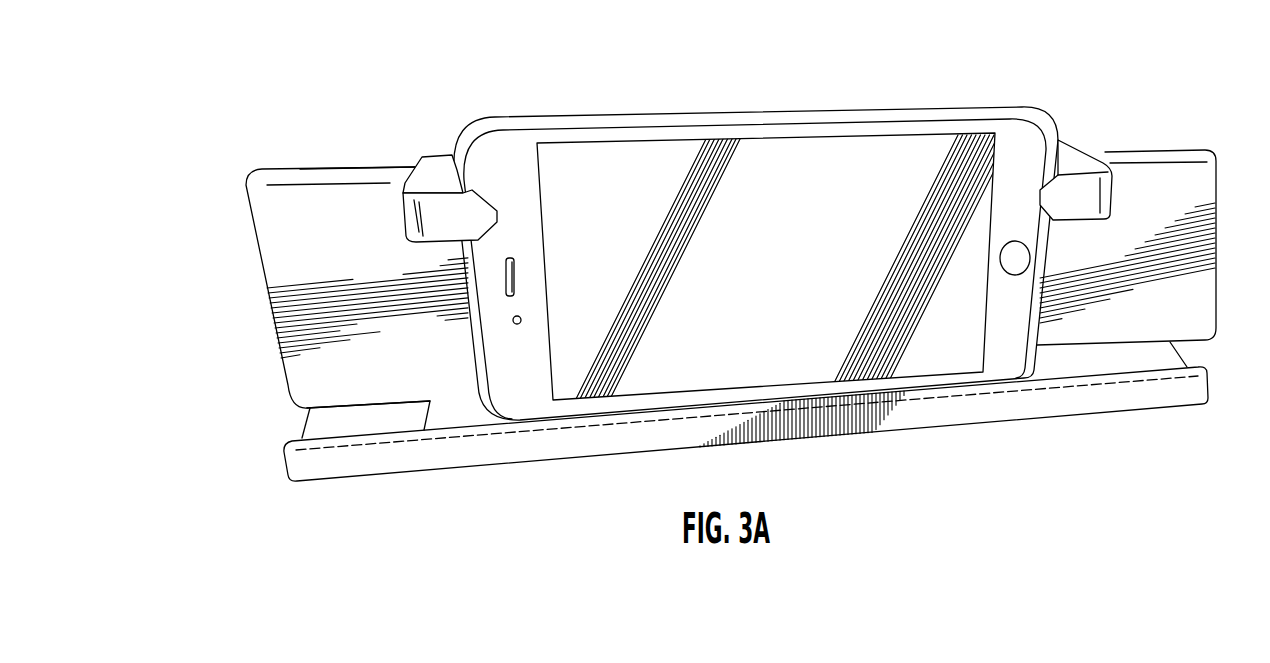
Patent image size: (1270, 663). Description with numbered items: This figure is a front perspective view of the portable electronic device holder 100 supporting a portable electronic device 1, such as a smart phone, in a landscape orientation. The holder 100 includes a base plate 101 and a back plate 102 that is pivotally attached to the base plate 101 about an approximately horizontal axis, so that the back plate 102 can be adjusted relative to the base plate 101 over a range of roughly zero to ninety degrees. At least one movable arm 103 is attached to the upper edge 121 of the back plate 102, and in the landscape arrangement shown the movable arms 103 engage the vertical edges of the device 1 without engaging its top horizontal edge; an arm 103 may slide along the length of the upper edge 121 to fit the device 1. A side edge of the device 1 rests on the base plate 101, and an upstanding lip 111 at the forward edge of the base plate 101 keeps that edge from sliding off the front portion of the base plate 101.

The portable electronic device holder 100 is at (247, 90).
The portable electronic device 1 is at (523, 155).
The base plate 101 is at (322, 424).
The back plate 102 is at (278, 257).
The movable arm 103 is at (447, 210).
The upstanding lip 111 is at (447, 452).
The upper edge 121 is at (348, 166).